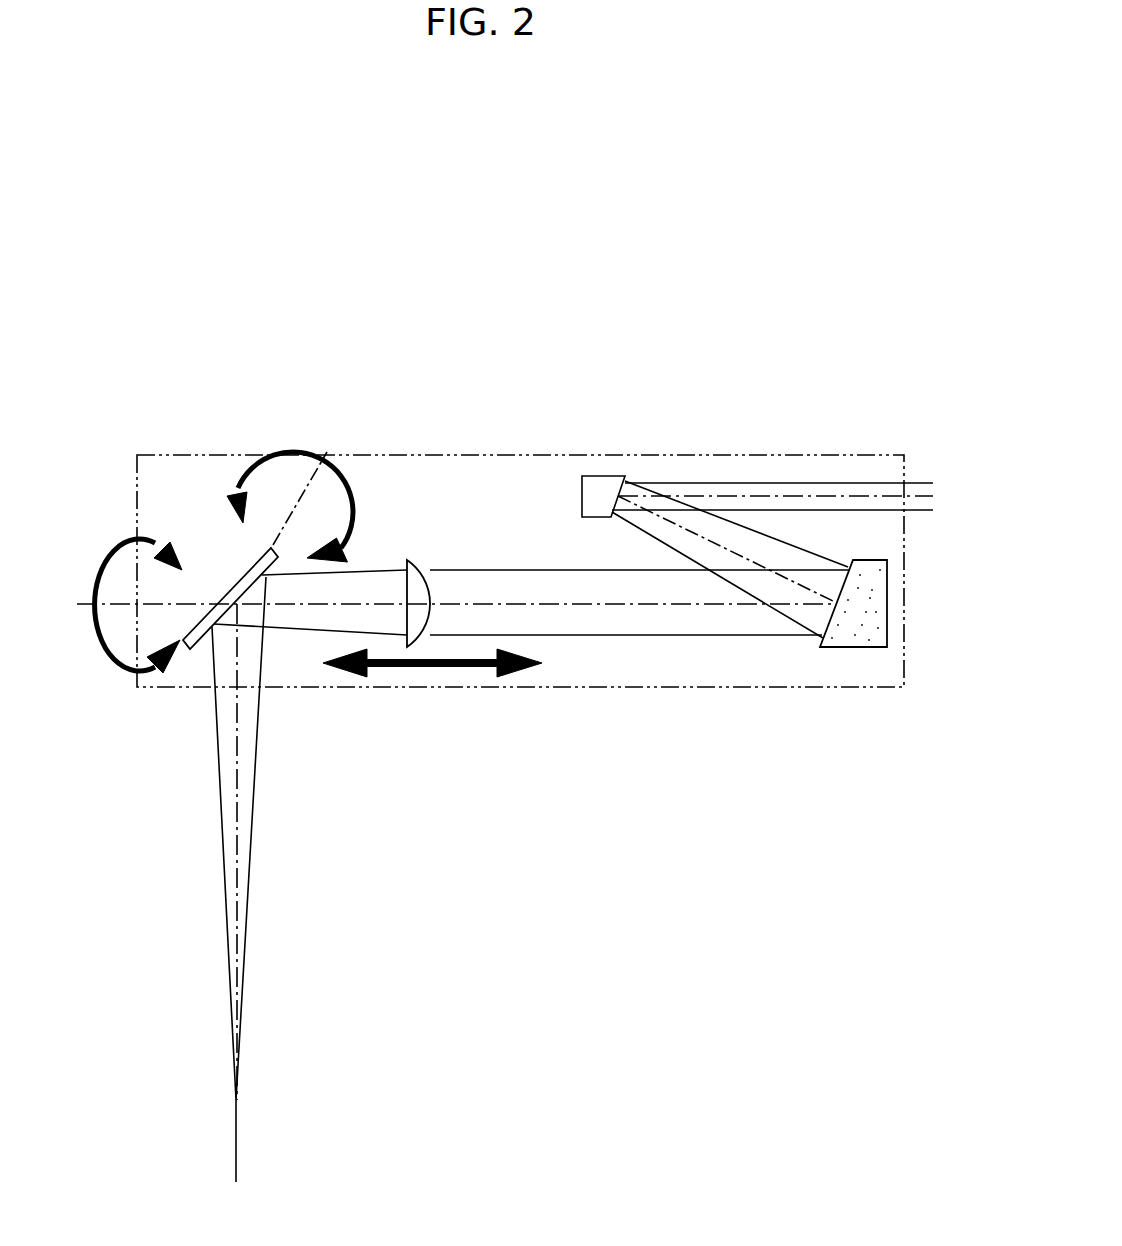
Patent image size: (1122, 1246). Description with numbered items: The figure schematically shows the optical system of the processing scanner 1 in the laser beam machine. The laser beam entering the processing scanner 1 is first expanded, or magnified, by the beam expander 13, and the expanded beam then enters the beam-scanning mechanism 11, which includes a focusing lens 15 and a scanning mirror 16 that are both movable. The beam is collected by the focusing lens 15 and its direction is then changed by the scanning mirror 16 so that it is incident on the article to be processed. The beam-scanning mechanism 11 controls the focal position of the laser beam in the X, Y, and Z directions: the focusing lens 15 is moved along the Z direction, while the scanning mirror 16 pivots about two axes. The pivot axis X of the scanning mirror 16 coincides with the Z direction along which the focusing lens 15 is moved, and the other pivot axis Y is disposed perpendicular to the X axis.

The processing scanner 1 is at (654, 313).
The beam-scanning mechanism 11 is at (319, 679).
The beam expander 13 is at (796, 462).
The focusing lens 15 is at (415, 580).
The scanning mirror 16 is at (238, 583).
The X direction X is at (120, 547).
The Y direction Y is at (332, 477).
The Z direction Z is at (453, 666).